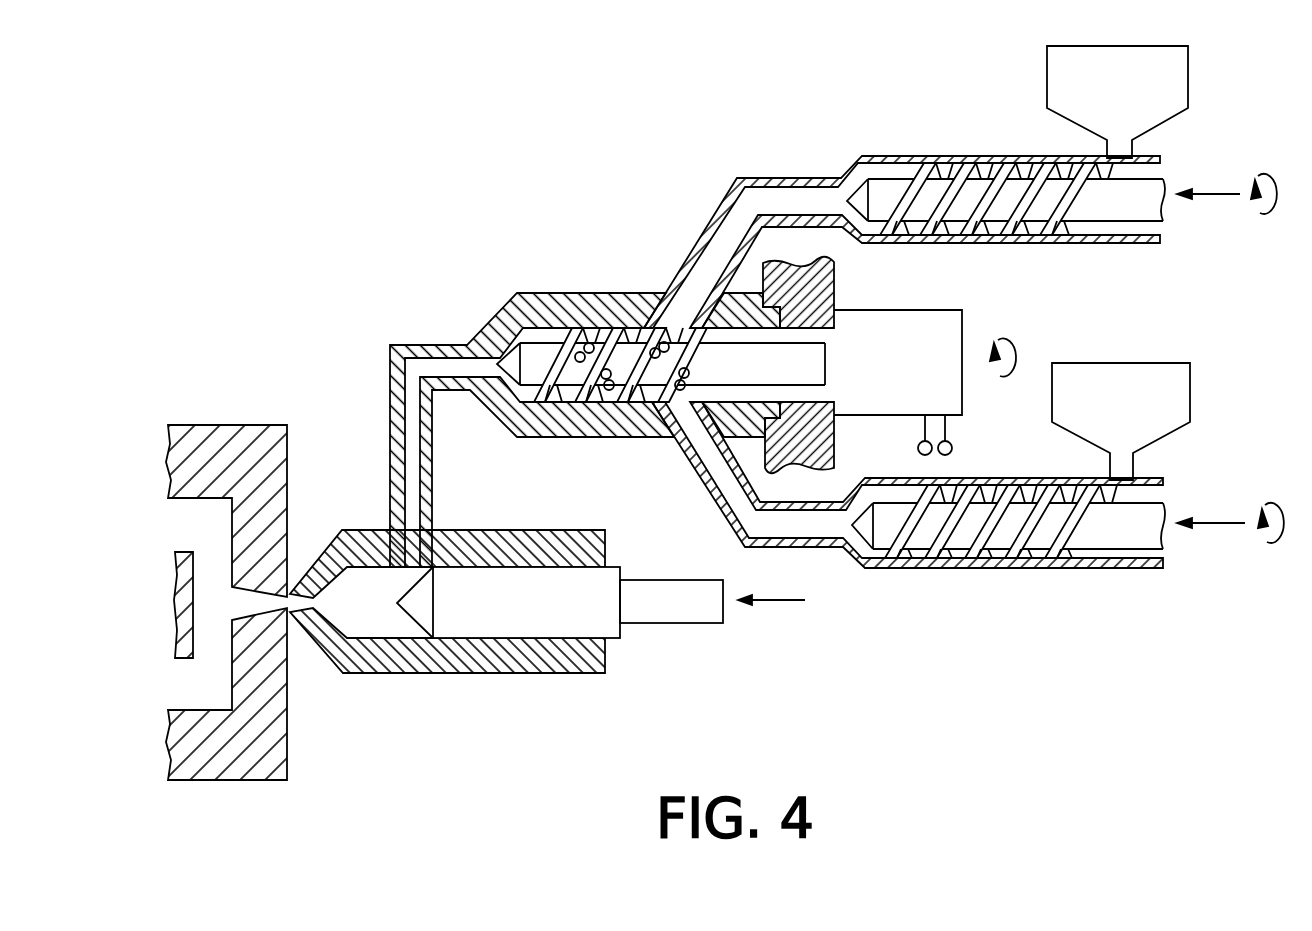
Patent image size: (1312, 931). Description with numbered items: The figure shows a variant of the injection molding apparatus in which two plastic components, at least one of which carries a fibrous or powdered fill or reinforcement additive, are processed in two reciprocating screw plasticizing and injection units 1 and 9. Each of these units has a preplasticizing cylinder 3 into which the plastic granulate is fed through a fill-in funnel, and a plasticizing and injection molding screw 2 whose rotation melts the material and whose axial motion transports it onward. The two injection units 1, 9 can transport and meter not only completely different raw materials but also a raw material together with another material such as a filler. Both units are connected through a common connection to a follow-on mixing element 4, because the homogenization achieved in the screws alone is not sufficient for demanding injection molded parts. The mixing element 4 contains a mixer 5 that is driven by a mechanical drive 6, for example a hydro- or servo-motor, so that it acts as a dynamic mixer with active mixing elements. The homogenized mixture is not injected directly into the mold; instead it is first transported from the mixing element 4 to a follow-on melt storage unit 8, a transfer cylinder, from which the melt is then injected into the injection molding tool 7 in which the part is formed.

The reciprocating screw plasticizing and injection unit 1 is at (988, 94).
The plasticizing and injection molding screw 2 is at (957, 178).
The preplasticizing cylinder 3 is at (880, 157).
The mixing element 4 is at (523, 300).
The mixer 5 is at (597, 343).
The mechanical drive 6 is at (915, 332).
The injection molding tool 7 is at (222, 426).
The melt storage unit 8 is at (497, 620).
The reciprocating screw plasticizing and injection unit 9 is at (1086, 638).